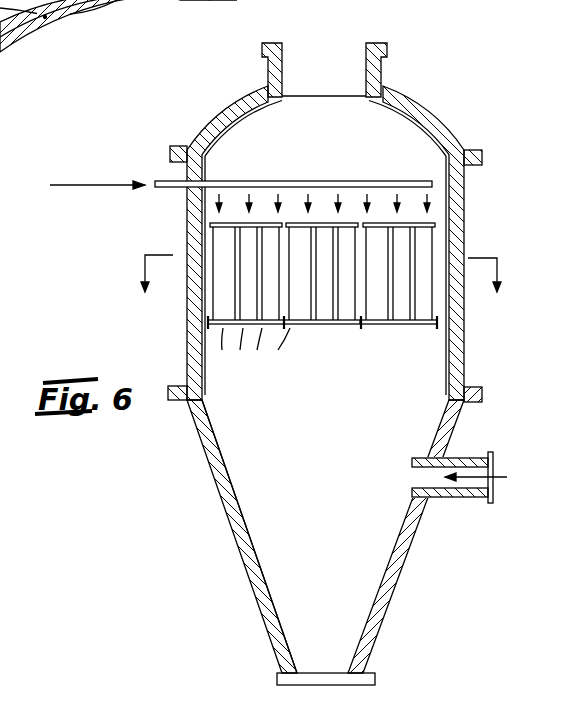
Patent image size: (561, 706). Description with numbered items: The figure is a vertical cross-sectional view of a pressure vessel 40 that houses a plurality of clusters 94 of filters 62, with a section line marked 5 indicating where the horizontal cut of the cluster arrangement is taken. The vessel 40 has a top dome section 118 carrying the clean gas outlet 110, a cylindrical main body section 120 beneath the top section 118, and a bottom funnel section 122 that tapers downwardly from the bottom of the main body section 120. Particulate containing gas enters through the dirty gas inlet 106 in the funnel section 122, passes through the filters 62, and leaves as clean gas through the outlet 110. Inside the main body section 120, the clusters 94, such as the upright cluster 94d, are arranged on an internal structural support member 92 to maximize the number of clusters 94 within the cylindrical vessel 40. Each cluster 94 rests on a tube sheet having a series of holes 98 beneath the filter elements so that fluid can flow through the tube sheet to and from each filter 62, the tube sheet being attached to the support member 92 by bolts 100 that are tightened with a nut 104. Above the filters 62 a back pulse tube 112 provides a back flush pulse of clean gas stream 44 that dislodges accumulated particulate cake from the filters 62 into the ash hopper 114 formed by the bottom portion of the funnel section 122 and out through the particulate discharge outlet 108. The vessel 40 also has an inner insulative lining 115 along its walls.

The pressure vessel 40 is at (437, 50).
The clean gas stream 44 is at (70, 181).
The filters 62 is at (420, 255).
The internal structural support member 92 is at (389, 328).
The cluster 94 is at (360, 292).
The upright cluster 94d is at (125, 0).
The holes 98 is at (256, 351).
The bolts 100 is at (437, 322).
The nut 104 is at (452, 341).
The dirty gas inlet 106 is at (508, 476).
The particulate discharge outlet 108 is at (315, 680).
The clean gas outlet 110 is at (335, 52).
The back pulse tube 112 is at (345, 181).
The ash hopper 114 is at (346, 571).
The inner insulative lining 115 is at (245, 506).
The top dome section 118 is at (208, 113).
The cylindrical main body section 120 is at (187, 327).
The bottom funnel section 122 is at (240, 538).
The section line 5- 5 is at (318, 276).